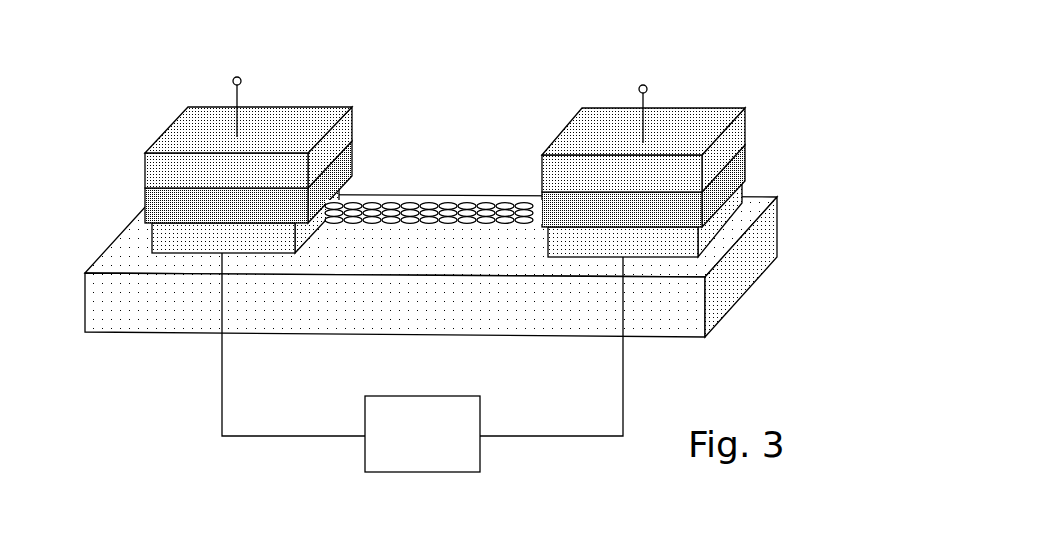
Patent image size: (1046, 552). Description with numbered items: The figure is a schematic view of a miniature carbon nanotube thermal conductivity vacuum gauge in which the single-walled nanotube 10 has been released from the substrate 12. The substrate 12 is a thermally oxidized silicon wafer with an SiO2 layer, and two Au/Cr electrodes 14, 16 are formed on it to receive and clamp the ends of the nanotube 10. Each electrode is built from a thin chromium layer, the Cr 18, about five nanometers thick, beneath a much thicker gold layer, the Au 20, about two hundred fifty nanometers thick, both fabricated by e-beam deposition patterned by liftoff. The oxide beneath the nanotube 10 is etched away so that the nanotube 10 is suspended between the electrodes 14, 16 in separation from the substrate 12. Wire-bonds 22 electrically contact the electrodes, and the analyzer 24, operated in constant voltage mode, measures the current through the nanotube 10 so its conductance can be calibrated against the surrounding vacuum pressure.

The single-walled nanotube 10 is at (448, 201).
The SiO2 substrate 12 is at (152, 242).
The Au/Cr electrode 14 is at (157, 108).
The Au/Cr electrode 16 is at (693, 95).
The Cr 18 is at (145, 207).
The Au 20 is at (145, 172).
The wire-bonds 22 is at (290, 437).
The analyzer 24 is at (462, 472).